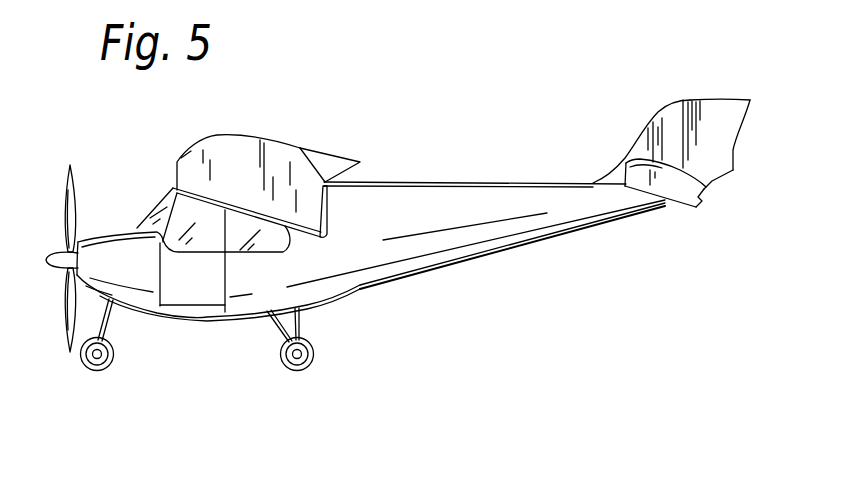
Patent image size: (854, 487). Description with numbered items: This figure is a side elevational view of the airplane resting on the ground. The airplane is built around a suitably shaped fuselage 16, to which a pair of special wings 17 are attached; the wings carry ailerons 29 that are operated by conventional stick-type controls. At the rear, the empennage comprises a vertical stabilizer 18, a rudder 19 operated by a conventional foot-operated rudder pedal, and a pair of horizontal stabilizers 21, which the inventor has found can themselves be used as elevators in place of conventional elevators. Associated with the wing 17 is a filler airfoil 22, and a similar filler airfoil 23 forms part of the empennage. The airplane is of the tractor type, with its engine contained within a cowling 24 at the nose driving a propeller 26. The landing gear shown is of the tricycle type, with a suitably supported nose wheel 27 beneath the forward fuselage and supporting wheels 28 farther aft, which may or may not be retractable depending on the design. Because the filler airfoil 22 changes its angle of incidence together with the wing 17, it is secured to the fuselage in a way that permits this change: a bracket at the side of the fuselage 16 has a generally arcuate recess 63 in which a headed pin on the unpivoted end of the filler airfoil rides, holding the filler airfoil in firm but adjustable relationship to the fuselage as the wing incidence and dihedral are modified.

The fuselage 16 is at (437, 263).
The wing 17 is at (227, 143).
The vertical stabilizer 18 is at (660, 128).
The rudder 19 is at (717, 110).
The horizontal stabilizer 21 is at (694, 183).
The filler airfoil 22 is at (303, 222).
The filler airfoil 23 is at (682, 210).
The cowling 24 is at (117, 247).
The propeller 26 is at (64, 317).
The nose wheel 27 is at (112, 354).
The supporting wheel 28 is at (315, 354).
The aileron 29 is at (340, 163).
The arcuate recess 63 is at (330, 212).